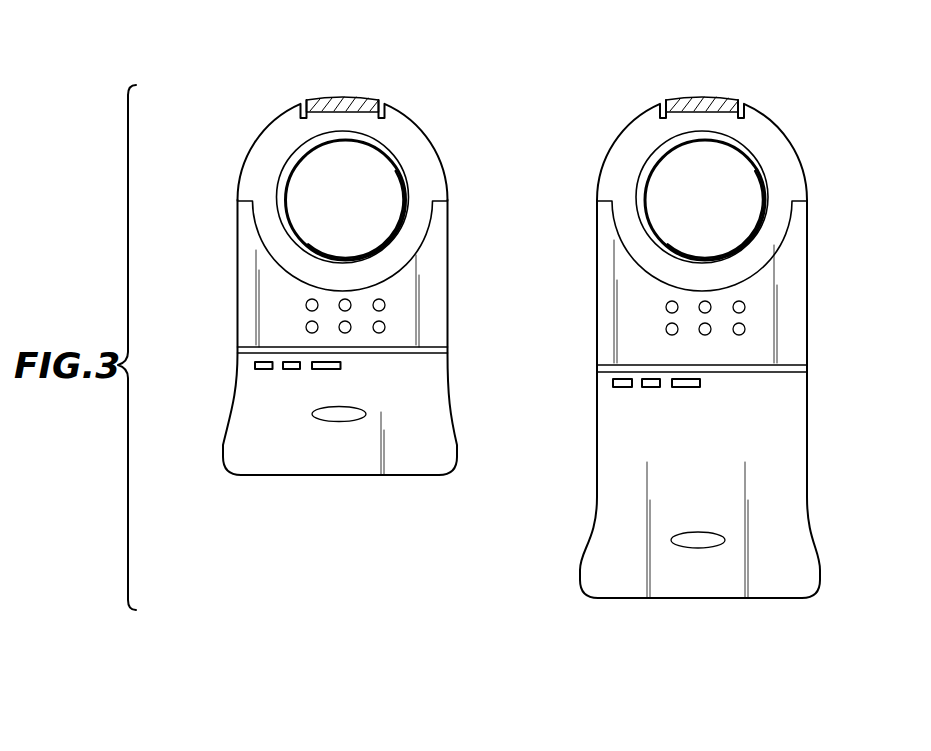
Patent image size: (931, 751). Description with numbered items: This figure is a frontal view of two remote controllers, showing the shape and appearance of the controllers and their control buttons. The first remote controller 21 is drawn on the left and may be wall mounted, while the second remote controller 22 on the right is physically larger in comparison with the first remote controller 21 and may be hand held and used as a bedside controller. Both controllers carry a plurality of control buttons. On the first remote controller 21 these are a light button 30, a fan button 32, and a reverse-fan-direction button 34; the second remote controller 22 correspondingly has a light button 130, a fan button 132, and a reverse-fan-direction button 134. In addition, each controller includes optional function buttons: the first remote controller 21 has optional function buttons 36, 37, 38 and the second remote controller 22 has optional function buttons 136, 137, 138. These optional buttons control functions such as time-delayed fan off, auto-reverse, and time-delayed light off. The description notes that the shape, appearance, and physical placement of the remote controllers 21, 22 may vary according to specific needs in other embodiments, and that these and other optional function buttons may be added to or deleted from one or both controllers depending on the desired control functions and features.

The first remote controller 21 is at (343, 84).
The second remote controller 22 is at (700, 85).
The light button 30 is at (380, 173).
The fan button 32 is at (433, 281).
The reverse-fan-direction button 34 is at (364, 107).
The optional function button 36 is at (256, 365).
The optional function button 37 is at (292, 372).
The optional function button 38 is at (341, 367).
The light button 130 is at (740, 177).
The fan button 132 is at (793, 281).
The reverse-fan-direction button 134 is at (726, 108).
The optional function button 136 is at (614, 383).
The optional function button 137 is at (651, 389).
The optional function button 138 is at (699, 384).